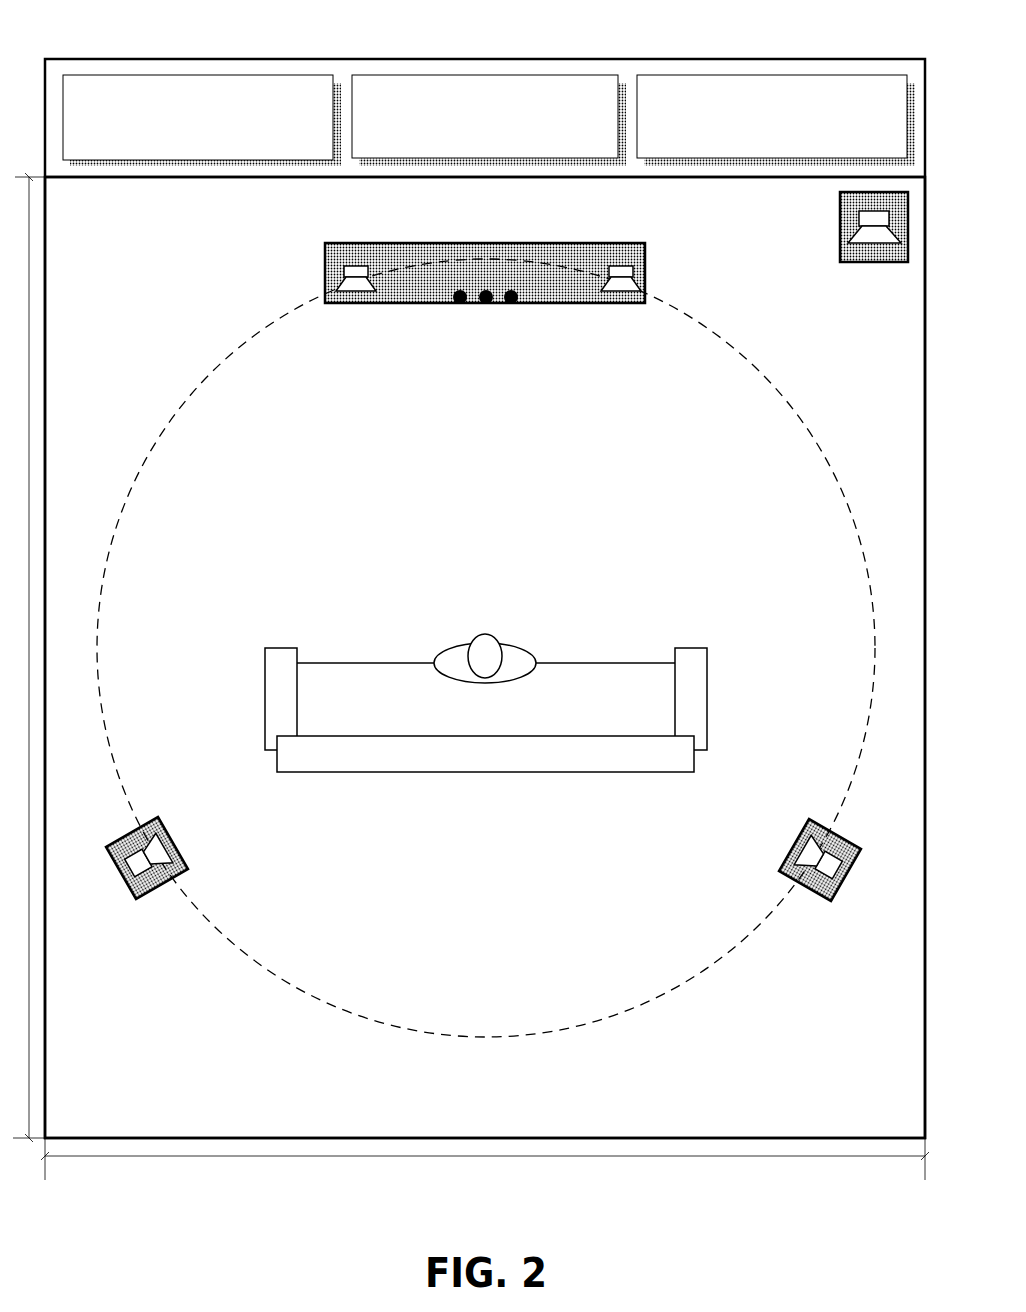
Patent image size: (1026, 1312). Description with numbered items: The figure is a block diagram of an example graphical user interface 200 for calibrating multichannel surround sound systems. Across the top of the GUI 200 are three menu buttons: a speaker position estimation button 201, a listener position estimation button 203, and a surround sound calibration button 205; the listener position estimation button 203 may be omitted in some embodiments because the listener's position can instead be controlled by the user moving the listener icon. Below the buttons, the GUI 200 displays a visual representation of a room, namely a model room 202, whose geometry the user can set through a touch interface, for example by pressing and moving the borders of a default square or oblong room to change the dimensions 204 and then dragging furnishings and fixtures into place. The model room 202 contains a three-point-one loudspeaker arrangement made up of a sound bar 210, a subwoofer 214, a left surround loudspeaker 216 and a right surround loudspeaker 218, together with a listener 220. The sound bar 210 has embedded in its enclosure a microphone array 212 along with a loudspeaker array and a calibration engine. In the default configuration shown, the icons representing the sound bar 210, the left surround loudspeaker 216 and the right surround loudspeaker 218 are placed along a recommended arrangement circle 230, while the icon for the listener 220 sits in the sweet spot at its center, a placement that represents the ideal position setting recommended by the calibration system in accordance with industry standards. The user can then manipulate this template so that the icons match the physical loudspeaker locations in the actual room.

The graphical user interface 200 is at (93, 19).
The speaker position estimation button 201 is at (288, 142).
The model room 202 is at (133, 252).
The listener position estimation button 203 is at (577, 142).
The dimensions 204 is at (80, 1156).
The surround sound calibration button 205 is at (870, 142).
The sound bar 210 is at (573, 232).
The microphone array 212 is at (615, 419).
The subwoofer 214 is at (865, 319).
The left surround loudspeaker 216 is at (162, 986).
The right surround loudspeaker 218 is at (842, 986).
The listener 220 is at (453, 632).
The recommended arrangement circle 230 is at (503, 1064).